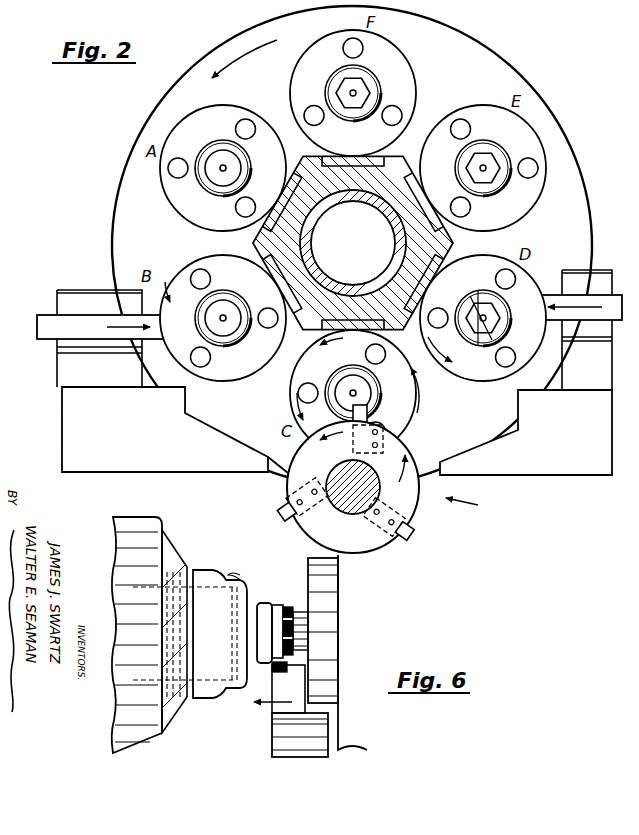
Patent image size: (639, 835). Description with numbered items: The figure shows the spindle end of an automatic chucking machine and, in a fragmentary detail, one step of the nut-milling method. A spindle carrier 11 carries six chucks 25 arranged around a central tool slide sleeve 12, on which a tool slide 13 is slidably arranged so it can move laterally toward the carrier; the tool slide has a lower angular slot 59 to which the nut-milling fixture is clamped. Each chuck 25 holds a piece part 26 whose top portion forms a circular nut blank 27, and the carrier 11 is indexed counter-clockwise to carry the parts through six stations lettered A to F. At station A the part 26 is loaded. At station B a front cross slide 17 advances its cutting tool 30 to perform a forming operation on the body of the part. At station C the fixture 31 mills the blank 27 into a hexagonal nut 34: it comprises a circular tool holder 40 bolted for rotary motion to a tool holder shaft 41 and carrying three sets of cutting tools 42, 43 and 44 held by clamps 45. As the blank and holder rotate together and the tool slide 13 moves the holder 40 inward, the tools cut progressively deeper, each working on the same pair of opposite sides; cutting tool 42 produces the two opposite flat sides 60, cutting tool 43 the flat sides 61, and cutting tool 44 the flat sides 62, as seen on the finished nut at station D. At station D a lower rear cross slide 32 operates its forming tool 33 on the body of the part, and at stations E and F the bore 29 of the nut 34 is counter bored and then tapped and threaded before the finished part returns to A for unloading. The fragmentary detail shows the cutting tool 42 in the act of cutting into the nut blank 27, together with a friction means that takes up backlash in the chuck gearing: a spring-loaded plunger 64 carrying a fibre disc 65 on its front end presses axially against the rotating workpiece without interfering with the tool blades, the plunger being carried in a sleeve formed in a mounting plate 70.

In FIG. 2, the spindle carrier 11 is at (463, 62).
In FIG. 2, the tool slide sleeve 12 is at (383, 207).
In FIG. 2, the tool slide 13 is at (288, 236).
In FIG. 2, the lower angular slot 59 is at (328, 302).
In FIG. 2, the chuck 25 is at (237, 115).
In FIG. 6, the chuck 25 is at (120, 532).
In FIG. 2, the piece part 26 is at (210, 152).
In FIG. 6, the piece part 26 is at (210, 673).
In FIG. 2, the nut blank 27 is at (210, 178).
In FIG. 6, the nut blank 27 is at (265, 612).
In FIG. 2, the bore 29 is at (353, 93).
In FIG. 2, the hexagonal nut 34 is at (372, 90).
In FIG. 6, the hexagonal nut 34 is at (277, 612).
In FIG. 2, the cutting tool 30 is at (120, 323).
In FIG. 2, the front cross slide 17 is at (112, 410).
In FIG. 2, the forming tool 33 is at (560, 300).
In FIG. 6, the forming tool 33 is at (273, 674).
In FIG. 2, the lower rear cross slide 32 is at (550, 445).
In FIG. 2, the nut-milling fixture 31 is at (473, 507).
In FIG. 2, the circular tool holder 40 is at (368, 552).
In FIG. 6, the circular tool holder 40 is at (293, 740).
In FIG. 2, the tool holder shaft 41 is at (342, 507).
In FIG. 2, the cutting tool 42 is at (367, 413).
In FIG. 6, the cutting tool 42 is at (295, 682).
In FIG. 2, the cutting tool 43 is at (420, 528).
In FIG. 2, the cutting tool 44 is at (282, 508).
In FIG. 2, the clamp 45 is at (385, 438).
In FIG. 2, the flat sides 60 is at (477, 305).
In FIG. 2, the flat sides 61 is at (472, 315).
In FIG. 2, the flat sides 62 is at (478, 310).
In FIG. 6, the plunger 64 is at (300, 637).
In FIG. 6, the fibre disc 65 is at (308, 617).
In FIG. 6, the mounting plate 70 is at (328, 657).